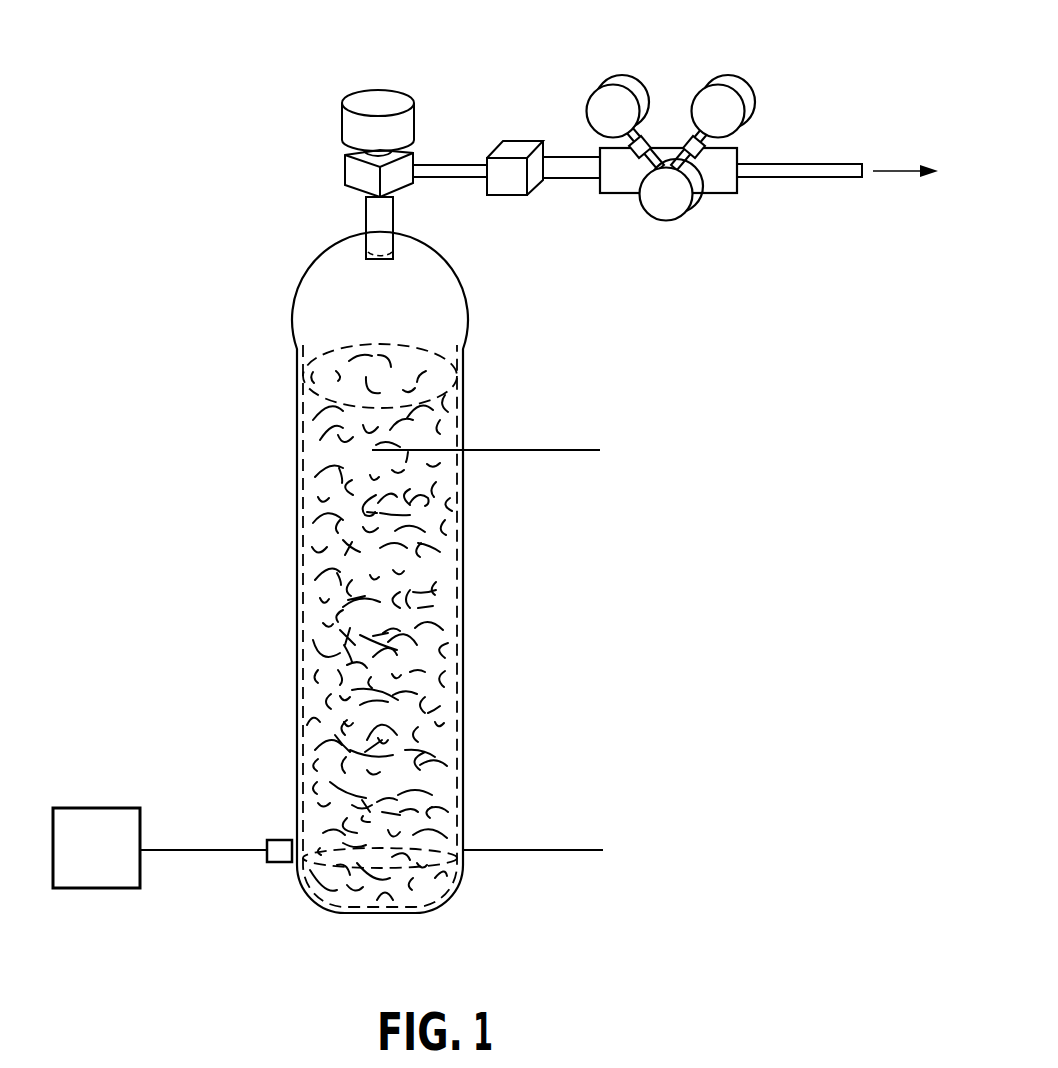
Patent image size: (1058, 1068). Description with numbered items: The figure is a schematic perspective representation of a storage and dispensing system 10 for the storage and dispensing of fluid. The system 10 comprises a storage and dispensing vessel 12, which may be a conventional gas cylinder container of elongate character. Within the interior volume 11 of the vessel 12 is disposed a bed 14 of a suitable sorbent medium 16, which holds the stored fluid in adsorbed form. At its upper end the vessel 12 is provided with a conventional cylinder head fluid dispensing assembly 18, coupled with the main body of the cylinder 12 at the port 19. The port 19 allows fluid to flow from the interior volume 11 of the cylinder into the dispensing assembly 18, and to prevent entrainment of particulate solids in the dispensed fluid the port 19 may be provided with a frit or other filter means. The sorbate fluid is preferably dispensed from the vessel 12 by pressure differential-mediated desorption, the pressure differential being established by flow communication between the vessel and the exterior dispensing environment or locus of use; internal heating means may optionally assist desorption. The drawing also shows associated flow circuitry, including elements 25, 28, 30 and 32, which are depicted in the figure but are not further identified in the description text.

The storage and dispensing system 10 is at (256, 167).
The interior volume 11 is at (450, 335).
The storage and dispensing vessel 12 is at (295, 590).
The bed 14 is at (320, 352).
The sorbent medium 16 is at (423, 585).
The cylinder head fluid dispensing assembly 18 is at (358, 63).
The port 19 is at (372, 260).
The conduit 25 is at (540, 850).
The controller 28 is at (77, 888).
The lead line 30 is at (187, 850).
The sensor 32 is at (278, 840).